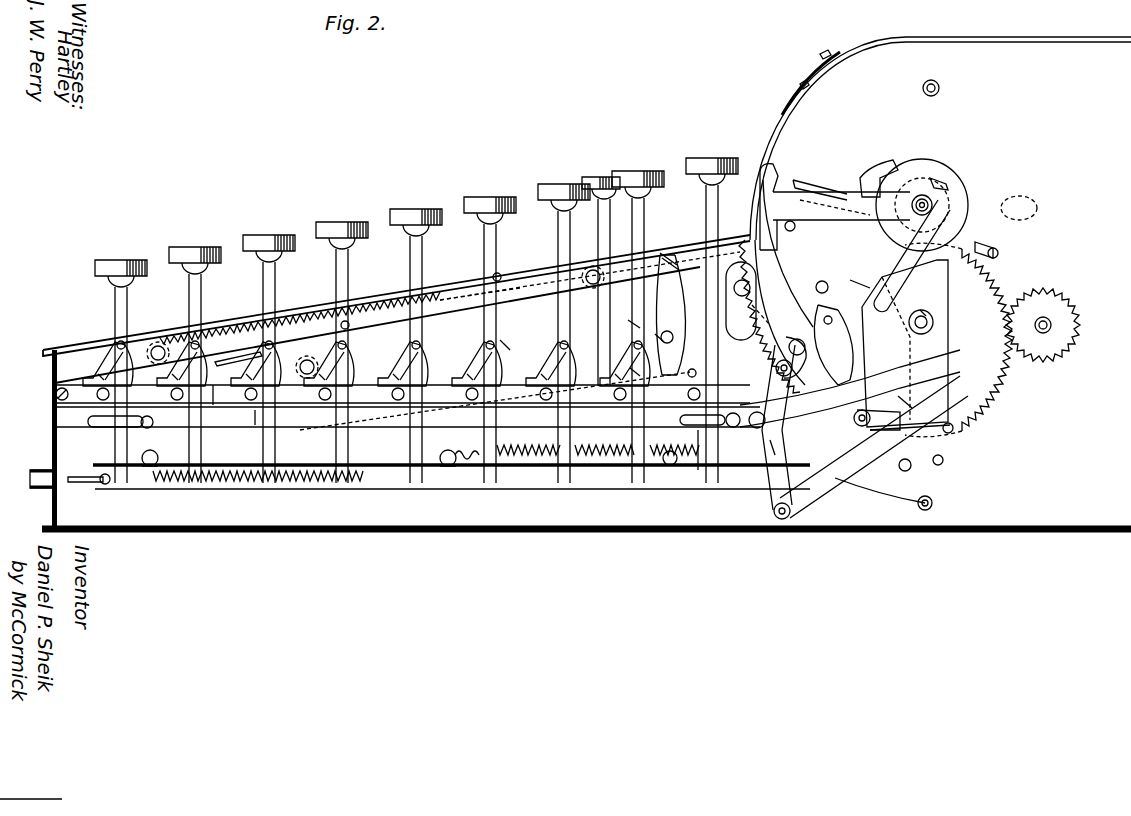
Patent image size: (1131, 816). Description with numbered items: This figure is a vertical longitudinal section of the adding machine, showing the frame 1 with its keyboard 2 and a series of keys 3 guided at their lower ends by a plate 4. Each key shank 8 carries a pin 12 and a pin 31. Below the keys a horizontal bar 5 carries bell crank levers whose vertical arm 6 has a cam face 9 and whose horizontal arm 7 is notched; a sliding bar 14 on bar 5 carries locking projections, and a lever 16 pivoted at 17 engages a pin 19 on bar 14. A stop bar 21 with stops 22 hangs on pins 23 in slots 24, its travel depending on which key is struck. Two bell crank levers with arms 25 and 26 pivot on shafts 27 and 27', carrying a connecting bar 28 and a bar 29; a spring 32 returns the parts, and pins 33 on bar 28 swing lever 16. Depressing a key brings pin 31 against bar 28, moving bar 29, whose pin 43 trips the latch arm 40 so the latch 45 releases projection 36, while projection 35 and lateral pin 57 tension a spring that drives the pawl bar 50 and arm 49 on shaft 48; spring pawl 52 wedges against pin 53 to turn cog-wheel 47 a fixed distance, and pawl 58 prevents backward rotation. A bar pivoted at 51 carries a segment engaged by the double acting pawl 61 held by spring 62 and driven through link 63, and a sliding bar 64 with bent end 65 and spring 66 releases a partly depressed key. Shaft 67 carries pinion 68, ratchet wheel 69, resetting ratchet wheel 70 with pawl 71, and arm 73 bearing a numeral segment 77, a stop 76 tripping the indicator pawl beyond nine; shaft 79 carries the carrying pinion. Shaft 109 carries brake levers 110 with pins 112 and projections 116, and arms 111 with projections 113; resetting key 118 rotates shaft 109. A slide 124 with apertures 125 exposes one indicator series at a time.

The frame 1 is at (52, 511).
The keyboard 2 is at (82, 345).
The key 3 is at (343, 222).
The plate 4 is at (402, 470).
The horizontal bar 5 is at (402, 395).
The vertical arm of bell crank lever 6 is at (482, 363).
The horizontal arm of bell crank lever 7 is at (446, 355).
The key shank 8 is at (424, 262).
The cam face 9 is at (496, 358).
The pin 12 is at (502, 343).
The sliding bar 14 is at (213, 405).
The lever 16 is at (668, 321).
The pivot 17 is at (660, 338).
The pin 19 is at (646, 342).
The stop bar 21 is at (208, 420).
The stops 22 is at (255, 425).
The pins 23 is at (150, 426).
The slots 24 is at (88, 422).
The bell crank lever arm 25 is at (636, 292).
The bell crank lever arm 26 is at (296, 470).
The transverse shaft 27 is at (775, 287).
The transverse shaft 27' is at (366, 297).
The connecting bar 28 is at (467, 312).
The bar 29 is at (355, 440).
The pin 31 is at (498, 275).
The spring 32 is at (300, 307).
The projecting pins 33 is at (672, 262).
The lateral projection 35 is at (690, 300).
The lateral projection 36 is at (774, 445).
The bell crank arm 40 is at (698, 470).
The pin 43 is at (690, 378).
The latch 45 is at (865, 431).
The cog-wheel 47 is at (905, 343).
The shaft 48 is at (933, 320).
The arm 49 is at (900, 400).
The pawl bar 50 is at (904, 468).
The pivotal connection 51 is at (757, 318).
The spring pawl 52 is at (912, 448).
The pin 53 is at (930, 385).
The lateral pin 57 is at (850, 388).
The pawl 58 is at (996, 250).
The double acting pawl 61 is at (813, 480).
The spring 62 is at (865, 488).
The link 63 is at (776, 286).
The sliding bar 64 is at (523, 482).
The bent end 65 is at (32, 470).
The spring 66 is at (326, 483).
The shaft 67 is at (935, 205).
The pinion 68 is at (965, 226).
The ratchet wheel 69 is at (950, 188).
The resetting ratchet wheel 70 is at (918, 215).
The spring actuated pawl 71 is at (942, 182).
The arm 73 is at (781, 192).
The stop 76 is at (941, 85).
The numeral segment 77 is at (803, 100).
The shaft 79 is at (1046, 320).
The shaft 109 is at (856, 284).
The brake lever 110 is at (866, 276).
The arm 111 is at (865, 426).
The pin 112 is at (920, 312).
The lateral projection 113 is at (782, 417).
The projection 116 is at (814, 345).
The resetting key 118 is at (582, 180).
The slide 124 is at (822, 52).
The apertures 125 is at (803, 82).